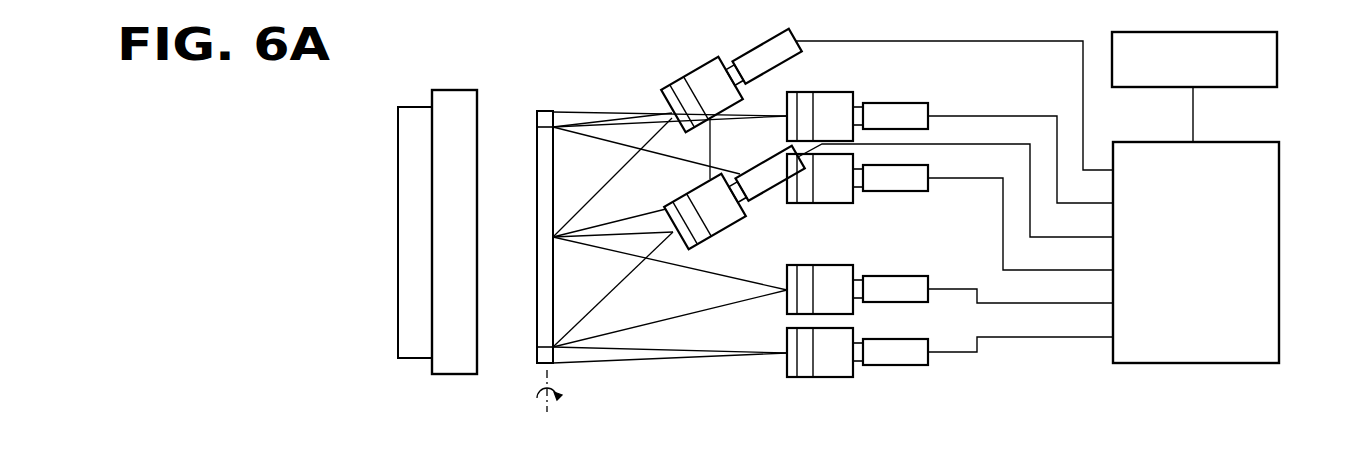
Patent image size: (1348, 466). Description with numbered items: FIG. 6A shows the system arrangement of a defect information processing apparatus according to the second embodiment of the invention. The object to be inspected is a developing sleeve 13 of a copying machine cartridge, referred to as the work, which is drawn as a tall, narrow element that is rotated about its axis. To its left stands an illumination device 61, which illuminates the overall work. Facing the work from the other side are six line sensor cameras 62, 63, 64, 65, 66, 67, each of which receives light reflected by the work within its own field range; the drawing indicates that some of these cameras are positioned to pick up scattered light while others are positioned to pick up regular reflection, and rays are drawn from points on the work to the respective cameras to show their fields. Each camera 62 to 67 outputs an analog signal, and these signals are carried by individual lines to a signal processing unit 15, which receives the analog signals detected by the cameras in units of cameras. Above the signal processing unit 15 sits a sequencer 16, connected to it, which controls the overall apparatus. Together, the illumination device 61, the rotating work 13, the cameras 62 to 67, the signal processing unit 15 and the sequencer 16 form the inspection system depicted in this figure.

The developing sleeve 13 is at (546, 109).
The signal processing unit 15 is at (1280, 250).
The sequencer 16 is at (1278, 58).
The illumination device 61 is at (400, 340).
The line sensor camera 62 is at (686, 77).
The line sensor camera 63 is at (690, 193).
The line sensor camera 64 is at (930, 105).
The line sensor camera 65 is at (917, 193).
The line sensor camera 66 is at (923, 271).
The line sensor camera 67 is at (920, 365).